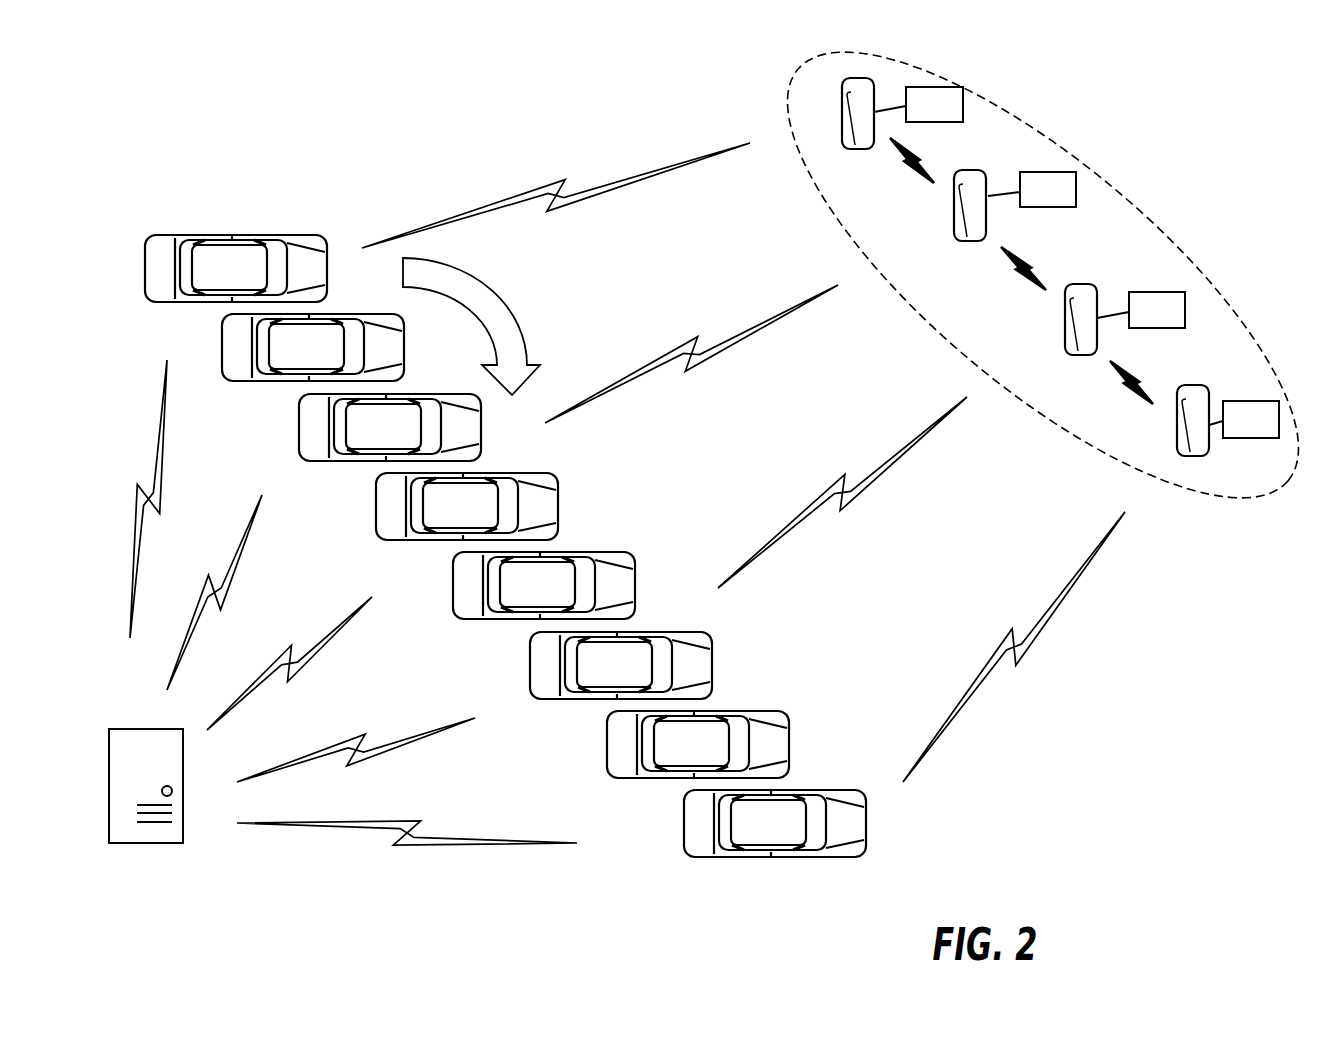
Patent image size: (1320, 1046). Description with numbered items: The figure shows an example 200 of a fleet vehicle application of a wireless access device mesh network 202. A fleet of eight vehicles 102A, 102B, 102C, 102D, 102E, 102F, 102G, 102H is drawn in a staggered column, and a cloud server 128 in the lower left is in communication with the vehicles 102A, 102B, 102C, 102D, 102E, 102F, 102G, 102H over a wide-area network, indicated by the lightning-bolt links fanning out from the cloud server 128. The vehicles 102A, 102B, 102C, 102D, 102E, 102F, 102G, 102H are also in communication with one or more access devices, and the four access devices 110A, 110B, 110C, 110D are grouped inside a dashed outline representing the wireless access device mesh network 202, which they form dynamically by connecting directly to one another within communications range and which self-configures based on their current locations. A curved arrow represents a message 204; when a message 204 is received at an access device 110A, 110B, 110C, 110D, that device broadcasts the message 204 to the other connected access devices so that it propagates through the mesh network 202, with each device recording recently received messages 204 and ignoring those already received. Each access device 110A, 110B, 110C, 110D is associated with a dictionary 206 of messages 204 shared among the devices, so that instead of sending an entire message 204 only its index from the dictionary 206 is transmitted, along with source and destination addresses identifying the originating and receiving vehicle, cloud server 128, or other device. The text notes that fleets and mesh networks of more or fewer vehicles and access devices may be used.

The example 200 is at (230, 73).
The vehicle 102A is at (236, 268).
The vehicle 102B is at (313, 347).
The vehicle 102C is at (390, 427).
The vehicle 102D is at (467, 506).
The vehicle 102E is at (544, 585).
The vehicle 102F is at (621, 665).
The vehicle 102G is at (698, 744).
The vehicle 102H is at (775, 823).
The message 204 is at (440, 336).
The cloud server 128 is at (131, 927).
The wireless access device mesh network 202 is at (954, 346).
The access device 110A is at (838, 179).
The access device 110B is at (946, 271).
The access device 110C is at (1057, 387).
The access device 110D is at (1173, 483).
The dictionary 206 is at (950, 116).